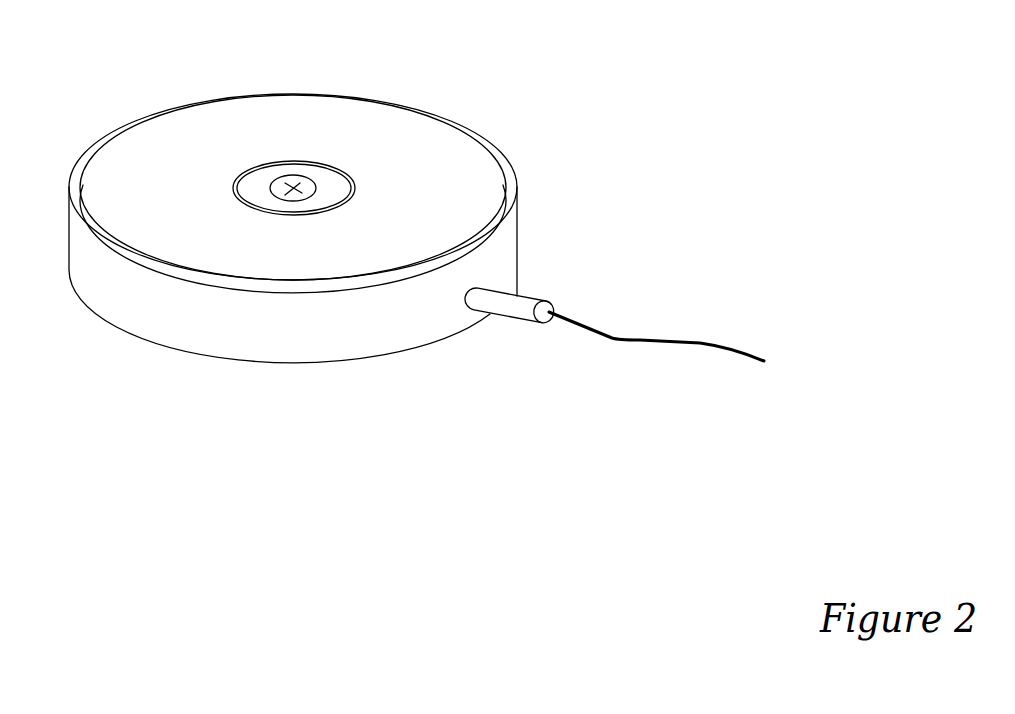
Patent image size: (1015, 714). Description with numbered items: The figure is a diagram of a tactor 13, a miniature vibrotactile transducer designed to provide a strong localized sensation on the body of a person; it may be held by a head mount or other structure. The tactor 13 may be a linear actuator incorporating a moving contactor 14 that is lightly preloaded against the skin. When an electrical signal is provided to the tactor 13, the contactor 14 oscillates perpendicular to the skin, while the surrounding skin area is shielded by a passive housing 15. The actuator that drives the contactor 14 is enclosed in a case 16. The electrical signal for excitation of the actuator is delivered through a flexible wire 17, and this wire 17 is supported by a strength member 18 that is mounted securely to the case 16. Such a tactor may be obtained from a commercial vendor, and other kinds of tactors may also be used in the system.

The tactor 13 is at (530, 70).
The contactor 14 is at (330, 182).
The passive housing 15 is at (413, 240).
The case 16 is at (513, 232).
The flexible wire 17 is at (717, 342).
The strength member 18 is at (532, 298).